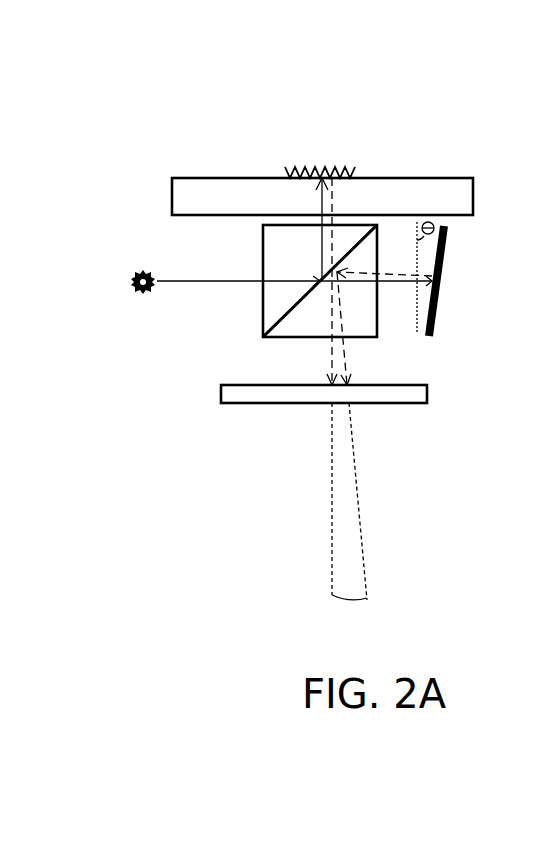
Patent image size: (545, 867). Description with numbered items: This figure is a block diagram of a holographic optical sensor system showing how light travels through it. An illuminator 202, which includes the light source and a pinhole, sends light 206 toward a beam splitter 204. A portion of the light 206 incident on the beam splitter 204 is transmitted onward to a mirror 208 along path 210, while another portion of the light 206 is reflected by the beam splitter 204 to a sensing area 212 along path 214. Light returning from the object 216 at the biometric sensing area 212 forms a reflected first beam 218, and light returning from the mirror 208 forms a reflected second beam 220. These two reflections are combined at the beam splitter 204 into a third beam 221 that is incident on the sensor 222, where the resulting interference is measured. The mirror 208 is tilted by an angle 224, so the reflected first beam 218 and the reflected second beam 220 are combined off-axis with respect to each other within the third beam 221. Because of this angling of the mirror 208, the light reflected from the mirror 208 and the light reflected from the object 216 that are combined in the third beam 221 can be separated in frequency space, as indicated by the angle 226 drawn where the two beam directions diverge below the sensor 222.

The illuminator 202 is at (146, 296).
The beam splitter 204 is at (262, 315).
The light 206 is at (215, 280).
The mirror 208 is at (437, 308).
The path 210 is at (362, 283).
The sensing area 212 is at (272, 195).
The path 214 is at (318, 243).
The object 216 is at (333, 175).
The reflected first beam 218 is at (332, 218).
The reflected second beam 220 is at (366, 268).
The third beam 221 is at (328, 353).
The sensor 222 is at (427, 392).
The angle of the mirror 224 is at (438, 222).
The angle 226 is at (362, 624).